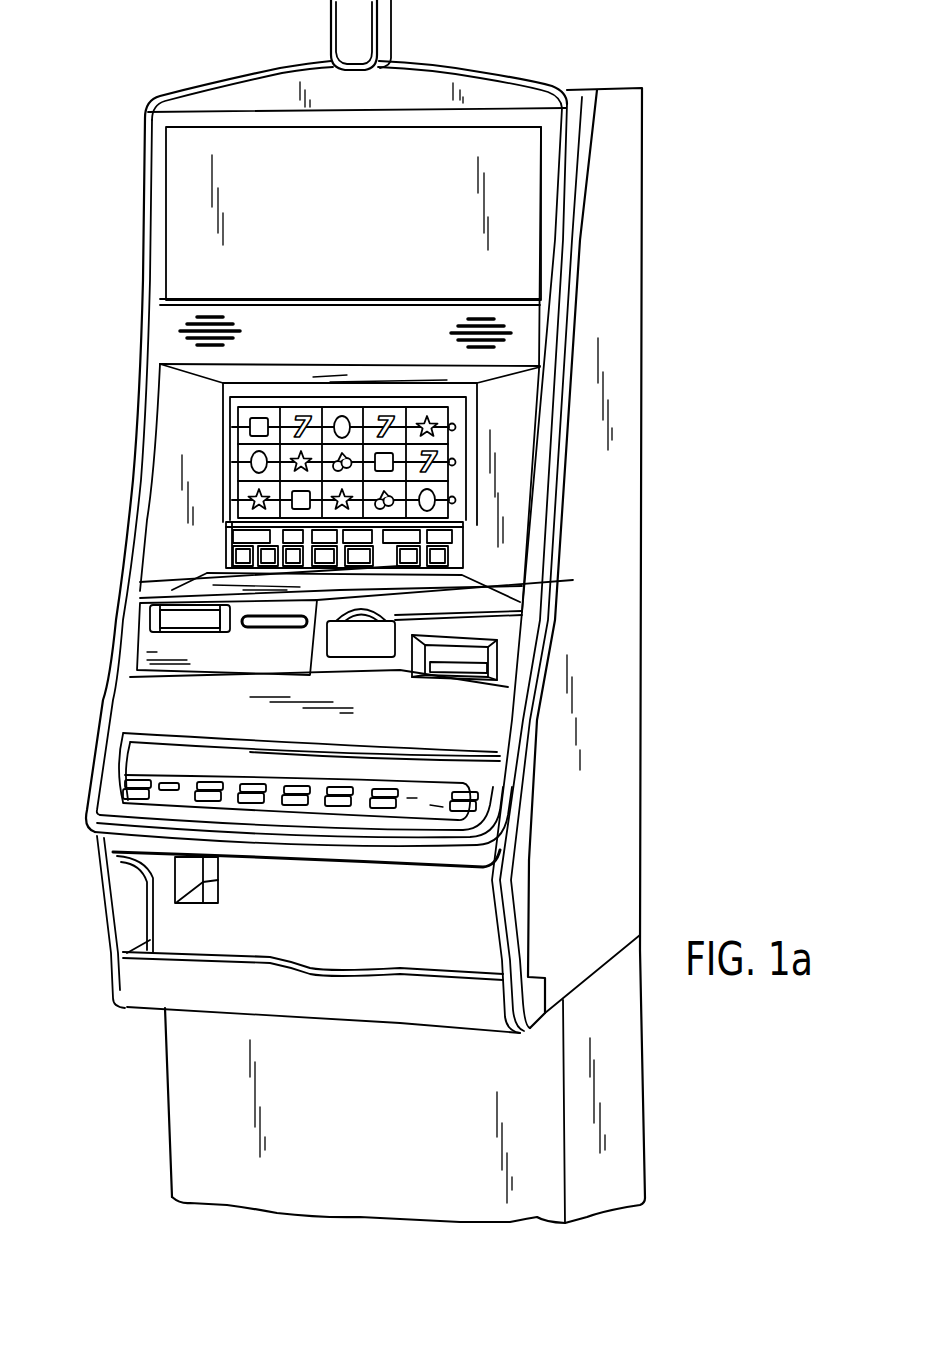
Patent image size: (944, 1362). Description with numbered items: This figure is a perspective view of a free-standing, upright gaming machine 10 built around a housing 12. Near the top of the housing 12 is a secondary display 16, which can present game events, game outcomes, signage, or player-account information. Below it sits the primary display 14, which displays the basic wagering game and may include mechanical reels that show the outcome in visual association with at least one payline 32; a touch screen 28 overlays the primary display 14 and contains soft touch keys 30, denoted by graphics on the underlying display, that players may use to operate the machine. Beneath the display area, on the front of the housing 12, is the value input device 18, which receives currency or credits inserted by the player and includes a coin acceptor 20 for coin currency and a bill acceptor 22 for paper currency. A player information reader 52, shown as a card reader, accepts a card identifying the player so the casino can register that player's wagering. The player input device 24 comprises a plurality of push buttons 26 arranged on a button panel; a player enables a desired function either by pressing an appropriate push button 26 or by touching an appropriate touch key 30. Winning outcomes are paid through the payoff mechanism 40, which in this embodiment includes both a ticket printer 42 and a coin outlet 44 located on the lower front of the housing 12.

The gaming machine 10 is at (97, 118).
The housing 12 is at (632, 237).
The primary display 14 is at (237, 426).
The secondary display 16 is at (194, 225).
The value input device 18 is at (490, 636).
The coin acceptor 20 is at (373, 655).
The bill acceptor 22 is at (470, 677).
The player input device 24 is at (450, 557).
The push buttons 26 is at (260, 782).
The touch screen 28 is at (455, 537).
The soft touch keys 30 is at (230, 553).
The payline 32 is at (413, 512).
The payoff mechanism 40 is at (157, 613).
The ticket printer 42 is at (180, 612).
The coin outlet 44 is at (177, 877).
The player information reader 52 is at (273, 630).